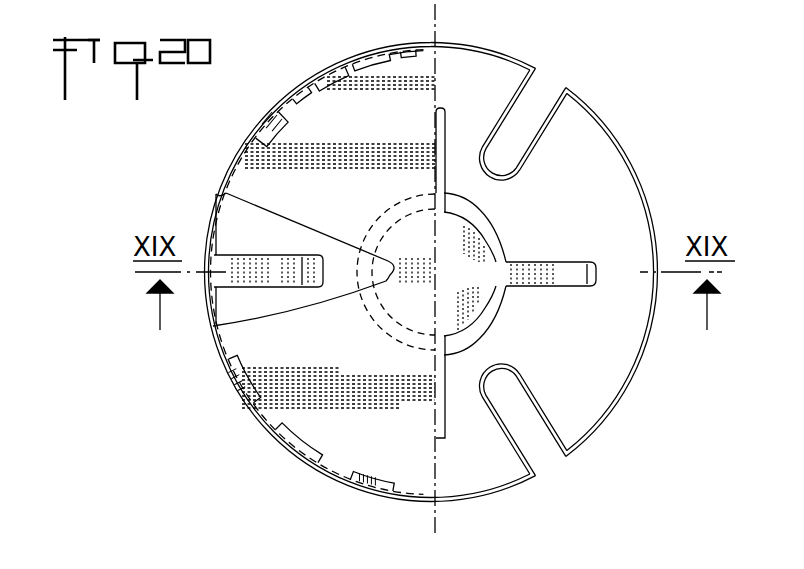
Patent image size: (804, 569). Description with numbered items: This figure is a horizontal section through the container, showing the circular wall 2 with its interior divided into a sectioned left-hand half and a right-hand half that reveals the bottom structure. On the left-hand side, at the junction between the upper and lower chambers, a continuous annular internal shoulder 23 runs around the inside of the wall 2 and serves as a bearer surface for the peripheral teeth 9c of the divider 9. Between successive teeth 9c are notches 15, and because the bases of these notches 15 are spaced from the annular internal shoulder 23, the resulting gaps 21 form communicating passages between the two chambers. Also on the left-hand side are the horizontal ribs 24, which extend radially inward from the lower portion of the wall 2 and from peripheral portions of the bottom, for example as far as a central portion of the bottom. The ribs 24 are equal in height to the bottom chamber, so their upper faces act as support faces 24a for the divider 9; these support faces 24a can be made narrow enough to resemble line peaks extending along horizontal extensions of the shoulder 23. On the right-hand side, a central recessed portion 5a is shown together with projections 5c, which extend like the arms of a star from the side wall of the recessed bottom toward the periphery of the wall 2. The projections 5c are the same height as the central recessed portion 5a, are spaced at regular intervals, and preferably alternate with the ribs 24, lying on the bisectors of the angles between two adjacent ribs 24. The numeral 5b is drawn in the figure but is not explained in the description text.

The wall 2 is at (640, 188).
The central recessed portion 5a is at (366, 270).
The hub bore 5b is at (383, 277).
The projections 5c is at (441, 143).
The divider 9 is at (300, 173).
The peripheral teeth 9c is at (296, 90).
The notches 15 is at (279, 104).
The gaps 21 is at (332, 76).
The annular internal shoulder 23 is at (236, 383).
The horizontal ribs 24 is at (547, 141).
The support faces 24a is at (272, 263).